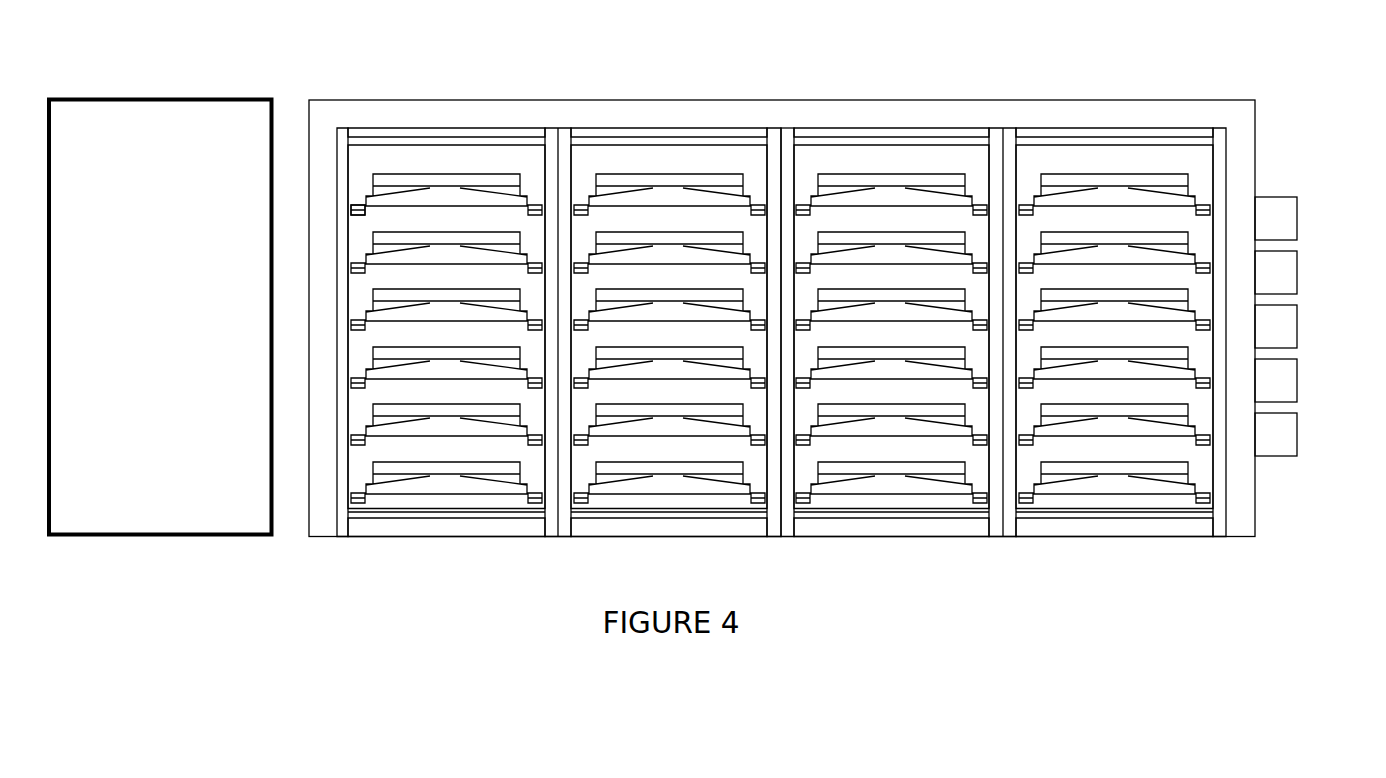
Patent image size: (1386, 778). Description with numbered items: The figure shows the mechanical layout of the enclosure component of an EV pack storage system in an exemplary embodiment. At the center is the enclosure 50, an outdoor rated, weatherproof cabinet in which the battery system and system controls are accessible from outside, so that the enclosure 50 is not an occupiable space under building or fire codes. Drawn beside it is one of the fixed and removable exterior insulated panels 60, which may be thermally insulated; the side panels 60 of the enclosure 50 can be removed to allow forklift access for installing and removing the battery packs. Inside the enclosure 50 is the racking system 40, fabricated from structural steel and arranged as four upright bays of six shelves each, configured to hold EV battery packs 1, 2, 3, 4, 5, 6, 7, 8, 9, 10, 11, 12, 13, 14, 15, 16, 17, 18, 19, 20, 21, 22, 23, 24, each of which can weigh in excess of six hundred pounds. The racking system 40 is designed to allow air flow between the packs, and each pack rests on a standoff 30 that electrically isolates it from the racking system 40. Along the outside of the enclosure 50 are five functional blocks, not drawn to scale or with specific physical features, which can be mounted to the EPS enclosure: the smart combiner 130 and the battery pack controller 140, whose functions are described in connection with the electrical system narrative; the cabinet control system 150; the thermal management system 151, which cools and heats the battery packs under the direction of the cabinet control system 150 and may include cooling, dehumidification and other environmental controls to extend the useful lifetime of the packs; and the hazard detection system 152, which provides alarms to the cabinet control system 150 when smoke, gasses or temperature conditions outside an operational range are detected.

The EV battery pack 1 is at (446, 194).
The EV battery pack 2 is at (669, 194).
The EV battery pack 3 is at (891, 194).
The EV battery pack 4 is at (1114, 194).
The EV battery pack 5 is at (446, 252).
The EV battery pack 6 is at (669, 252).
The EV battery pack 7 is at (891, 252).
The EV battery pack 8 is at (1114, 252).
The EV battery pack 9 is at (446, 309).
The EV battery pack 10 is at (669, 309).
The EV battery pack 11 is at (891, 309).
The EV battery pack 12 is at (1114, 309).
The EV battery pack 13 is at (446, 367).
The EV battery pack 14 is at (669, 367).
The EV battery pack 15 is at (891, 367).
The EV battery pack 16 is at (1114, 367).
The EV battery pack 17 is at (446, 424).
The EV battery pack 18 is at (669, 424).
The EV battery pack 19 is at (891, 424).
The EV battery pack 20 is at (1114, 424).
The EV battery pack 21 is at (446, 482).
The EV battery pack 22 is at (669, 482).
The EV battery pack 23 is at (891, 482).
The EV battery pack 24 is at (1114, 482).
The standoff 30 is at (351, 208).
The racking system 40 is at (790, 160).
The enclosure 50 is at (786, 100).
The exterior insulated panel 60 is at (208, 97).
The smart combiner 130 is at (1298, 218).
The battery pack controller 140 is at (1298, 272).
The cabinet control system 150 is at (1298, 326).
The thermal management system 151 is at (1298, 380).
The hazard detection system 152 is at (1298, 434).